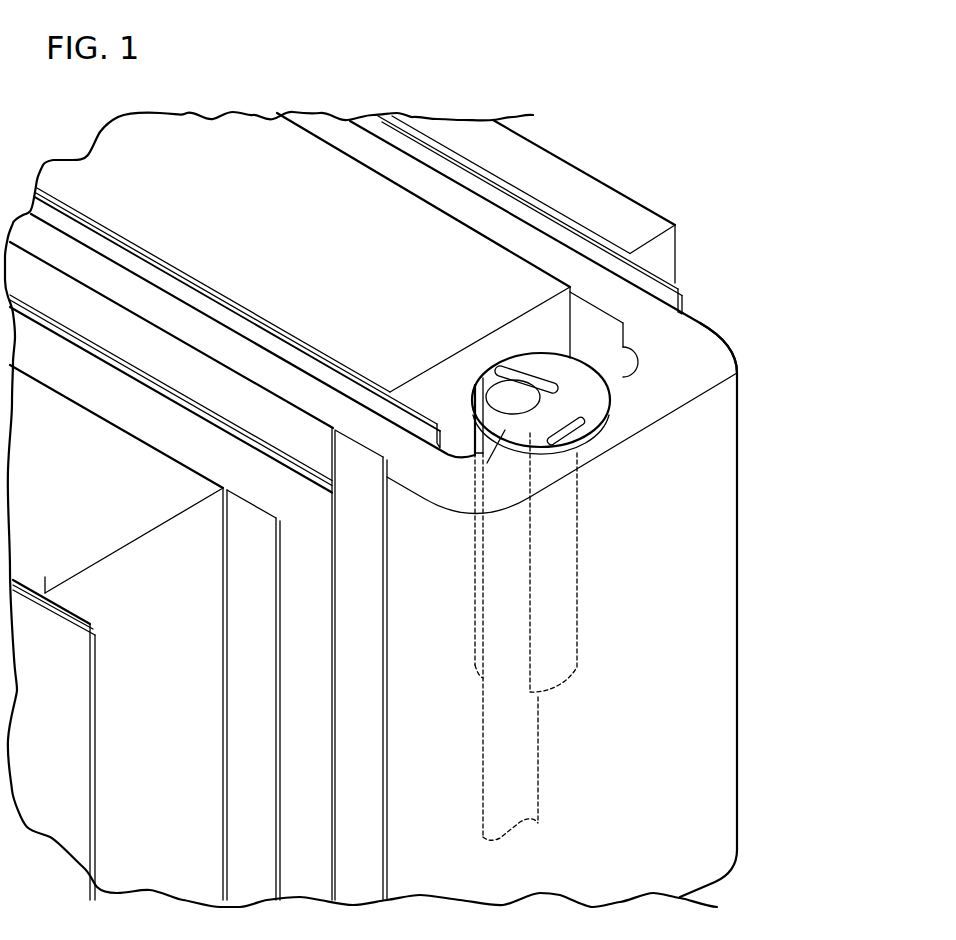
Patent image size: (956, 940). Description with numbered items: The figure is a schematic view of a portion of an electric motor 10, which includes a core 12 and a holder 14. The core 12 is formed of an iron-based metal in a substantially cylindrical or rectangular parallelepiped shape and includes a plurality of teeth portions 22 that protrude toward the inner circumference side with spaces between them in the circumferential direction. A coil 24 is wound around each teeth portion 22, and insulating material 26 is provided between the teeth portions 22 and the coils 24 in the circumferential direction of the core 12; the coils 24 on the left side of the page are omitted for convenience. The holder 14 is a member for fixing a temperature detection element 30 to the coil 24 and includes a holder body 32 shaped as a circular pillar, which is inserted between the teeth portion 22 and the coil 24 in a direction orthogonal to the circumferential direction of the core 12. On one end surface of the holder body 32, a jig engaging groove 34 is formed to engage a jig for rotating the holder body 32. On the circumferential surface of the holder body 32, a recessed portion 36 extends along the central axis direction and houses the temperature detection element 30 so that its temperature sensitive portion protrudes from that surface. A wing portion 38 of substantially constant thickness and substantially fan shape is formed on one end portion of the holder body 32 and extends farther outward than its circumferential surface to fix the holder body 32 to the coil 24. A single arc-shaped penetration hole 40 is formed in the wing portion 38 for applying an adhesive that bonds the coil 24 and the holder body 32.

The electric motor 10 is at (563, 90).
The core 12 is at (613, 163).
The holder 14 is at (462, 380).
The teeth portion 22 is at (433, 223).
The coil 24 is at (710, 343).
The insulating material 26 is at (653, 285).
The temperature detection element 30 is at (530, 782).
The holder body 32 is at (578, 597).
The jig engaging groove 34 is at (515, 373).
The recessed portion 36 is at (542, 392).
The wing portion 38 is at (600, 427).
The penetration hole 40 is at (557, 447).